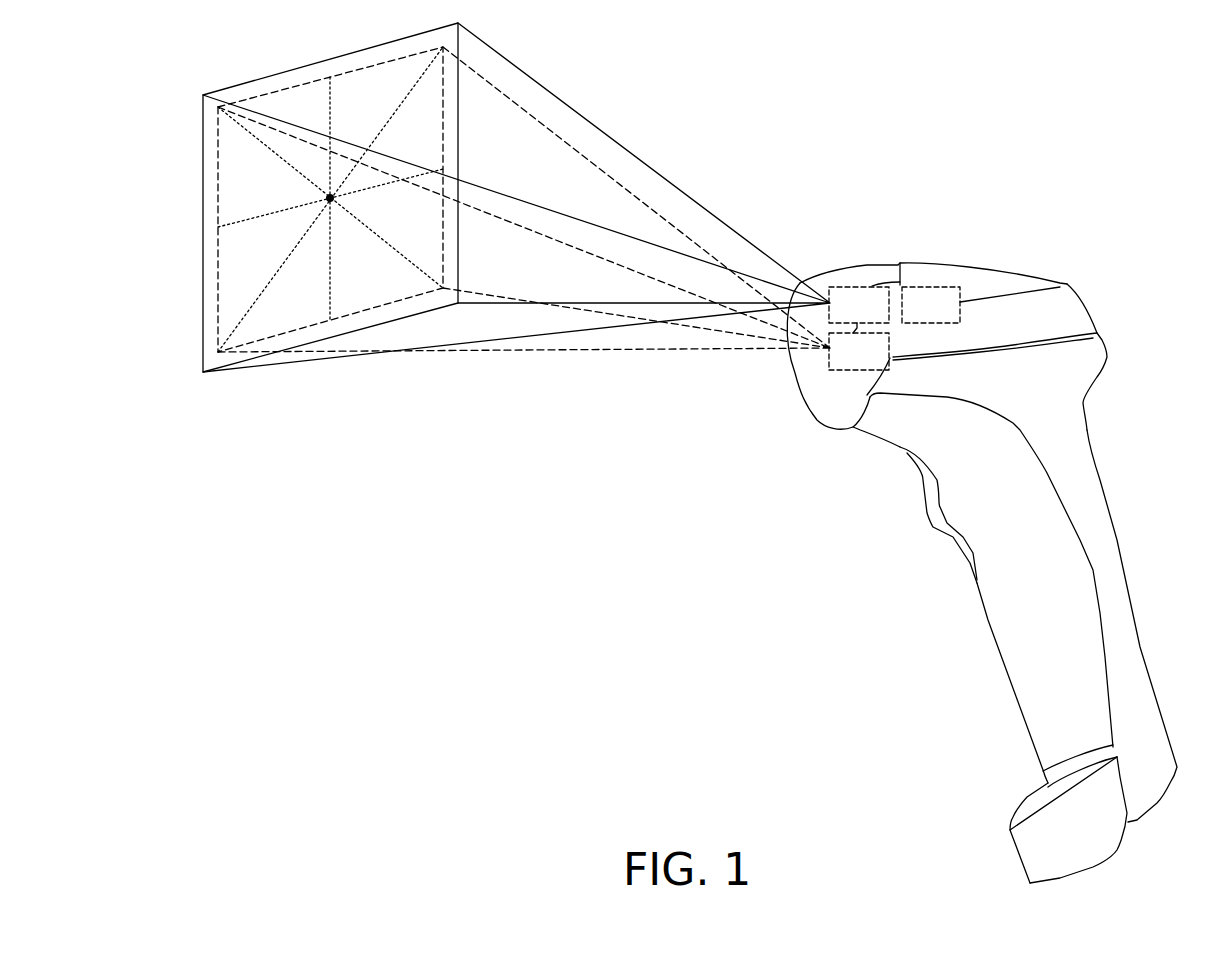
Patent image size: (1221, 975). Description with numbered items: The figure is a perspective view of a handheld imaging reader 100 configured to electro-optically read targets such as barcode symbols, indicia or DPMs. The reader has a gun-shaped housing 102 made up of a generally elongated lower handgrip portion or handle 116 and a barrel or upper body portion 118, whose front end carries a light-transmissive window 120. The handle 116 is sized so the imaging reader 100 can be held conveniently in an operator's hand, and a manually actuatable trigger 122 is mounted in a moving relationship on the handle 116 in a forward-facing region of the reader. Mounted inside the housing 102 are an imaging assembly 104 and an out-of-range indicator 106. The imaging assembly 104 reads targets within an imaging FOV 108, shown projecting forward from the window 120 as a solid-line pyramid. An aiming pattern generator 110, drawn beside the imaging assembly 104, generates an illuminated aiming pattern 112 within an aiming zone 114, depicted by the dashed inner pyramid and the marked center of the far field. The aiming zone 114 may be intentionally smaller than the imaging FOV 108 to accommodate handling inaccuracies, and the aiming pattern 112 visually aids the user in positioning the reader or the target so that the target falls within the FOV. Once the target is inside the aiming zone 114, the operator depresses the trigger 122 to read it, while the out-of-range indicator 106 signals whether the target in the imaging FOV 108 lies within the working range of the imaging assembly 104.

The handheld imaging reader 100 is at (1102, 157).
The housing 102 is at (1005, 264).
The imaging assembly 104 is at (859, 305).
The out-of-range indicator 106 is at (981, 305).
The imaging FOV 108 is at (333, 57).
The aiming pattern generator 110 is at (553, 208).
The aiming pattern 112 is at (249, 283).
The aiming zone 114 is at (218, 236).
The handle 116 is at (1123, 563).
The upper body portion 118 is at (1080, 308).
The light-transmissive window 120 is at (792, 360).
The trigger 122 is at (930, 517).